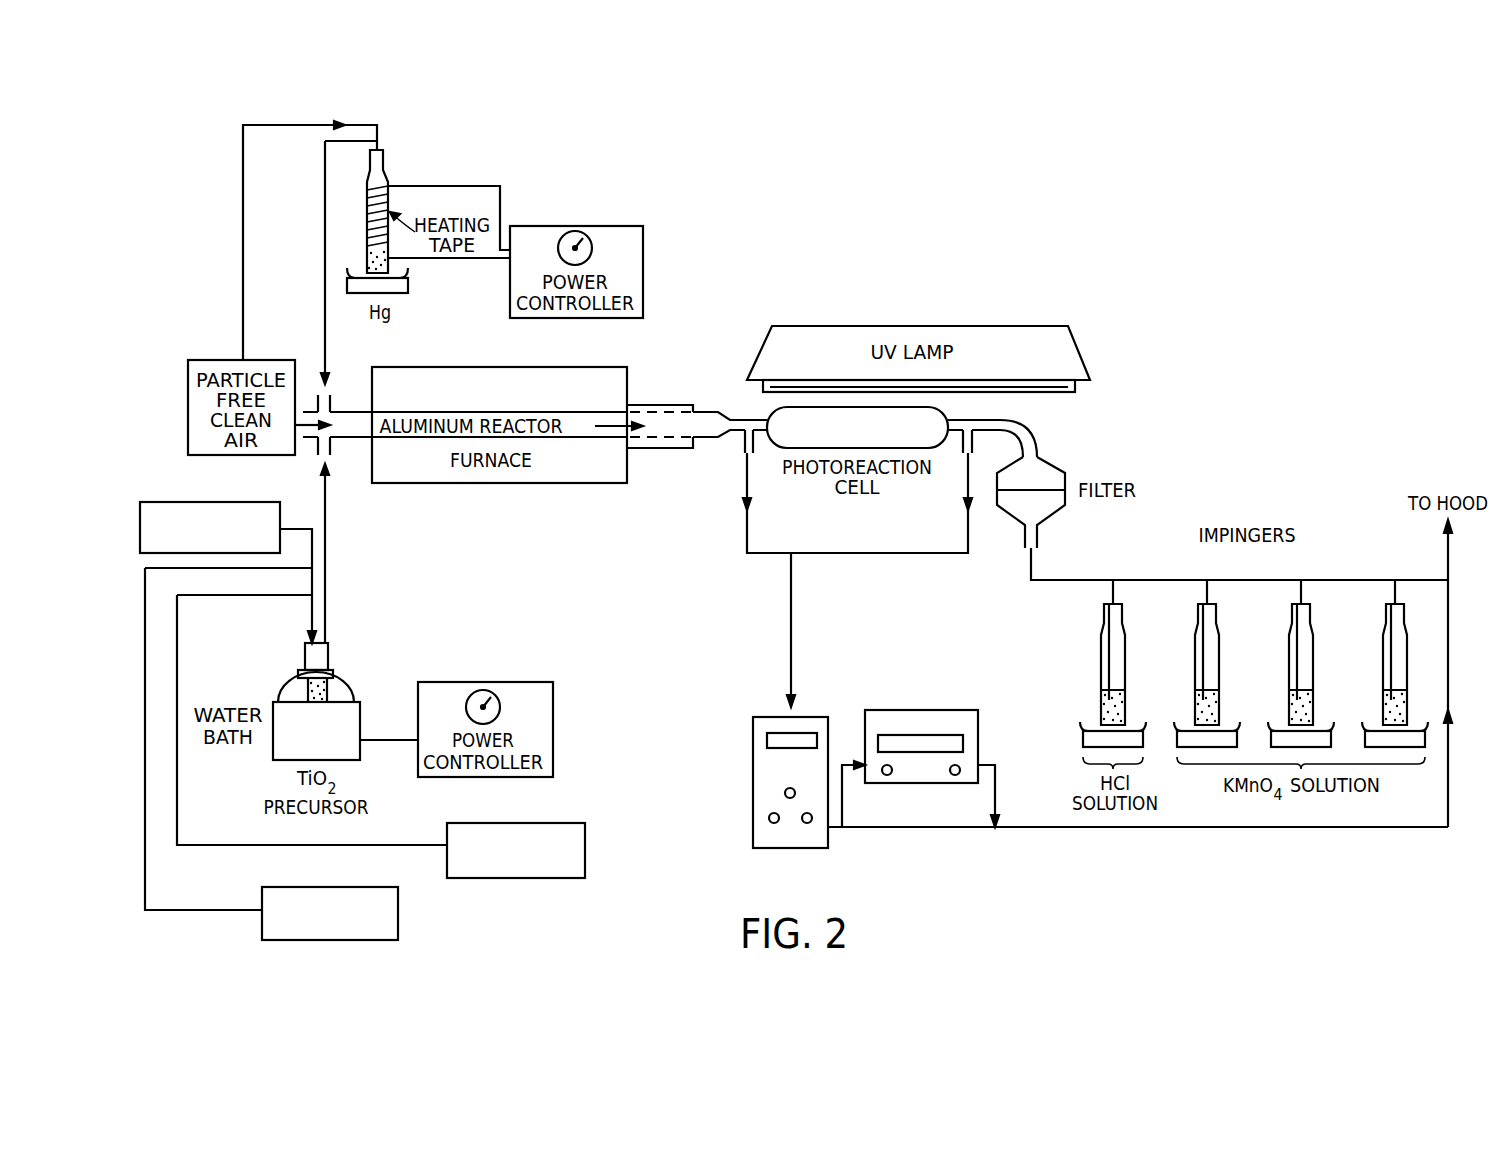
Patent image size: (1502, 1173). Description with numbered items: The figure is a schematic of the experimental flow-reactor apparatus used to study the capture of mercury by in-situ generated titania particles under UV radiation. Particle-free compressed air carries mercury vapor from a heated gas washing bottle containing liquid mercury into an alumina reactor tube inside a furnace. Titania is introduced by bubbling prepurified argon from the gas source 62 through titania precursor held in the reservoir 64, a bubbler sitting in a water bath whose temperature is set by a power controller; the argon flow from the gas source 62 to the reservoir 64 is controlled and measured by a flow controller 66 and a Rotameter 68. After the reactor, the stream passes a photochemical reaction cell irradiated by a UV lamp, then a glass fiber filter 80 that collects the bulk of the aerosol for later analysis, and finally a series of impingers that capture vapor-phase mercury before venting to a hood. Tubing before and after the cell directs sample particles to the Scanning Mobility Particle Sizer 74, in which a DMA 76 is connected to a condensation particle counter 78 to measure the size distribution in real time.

The gas source 62 is at (232, 502).
The reservoir 64 is at (330, 661).
The flow controller 66 is at (353, 887).
The Rotameter 68 is at (545, 823).
The Scanning Mobility Particle Sizer 74 is at (892, 650).
The DMA 76 is at (812, 717).
The condensation particle counter 78 is at (913, 710).
The glass fiber filter 80 is at (1048, 457).